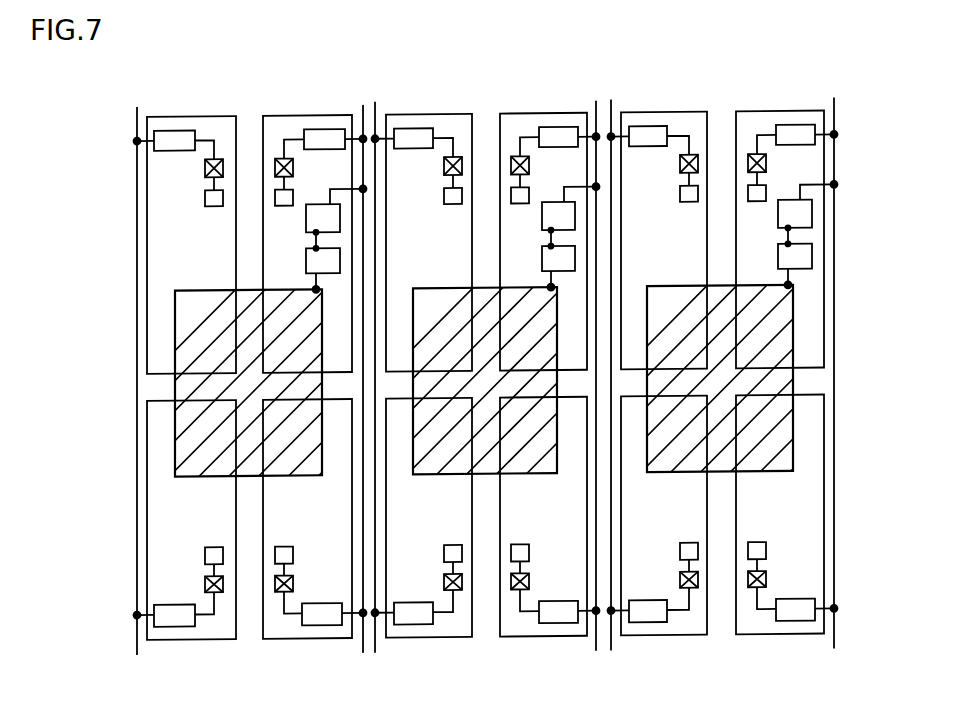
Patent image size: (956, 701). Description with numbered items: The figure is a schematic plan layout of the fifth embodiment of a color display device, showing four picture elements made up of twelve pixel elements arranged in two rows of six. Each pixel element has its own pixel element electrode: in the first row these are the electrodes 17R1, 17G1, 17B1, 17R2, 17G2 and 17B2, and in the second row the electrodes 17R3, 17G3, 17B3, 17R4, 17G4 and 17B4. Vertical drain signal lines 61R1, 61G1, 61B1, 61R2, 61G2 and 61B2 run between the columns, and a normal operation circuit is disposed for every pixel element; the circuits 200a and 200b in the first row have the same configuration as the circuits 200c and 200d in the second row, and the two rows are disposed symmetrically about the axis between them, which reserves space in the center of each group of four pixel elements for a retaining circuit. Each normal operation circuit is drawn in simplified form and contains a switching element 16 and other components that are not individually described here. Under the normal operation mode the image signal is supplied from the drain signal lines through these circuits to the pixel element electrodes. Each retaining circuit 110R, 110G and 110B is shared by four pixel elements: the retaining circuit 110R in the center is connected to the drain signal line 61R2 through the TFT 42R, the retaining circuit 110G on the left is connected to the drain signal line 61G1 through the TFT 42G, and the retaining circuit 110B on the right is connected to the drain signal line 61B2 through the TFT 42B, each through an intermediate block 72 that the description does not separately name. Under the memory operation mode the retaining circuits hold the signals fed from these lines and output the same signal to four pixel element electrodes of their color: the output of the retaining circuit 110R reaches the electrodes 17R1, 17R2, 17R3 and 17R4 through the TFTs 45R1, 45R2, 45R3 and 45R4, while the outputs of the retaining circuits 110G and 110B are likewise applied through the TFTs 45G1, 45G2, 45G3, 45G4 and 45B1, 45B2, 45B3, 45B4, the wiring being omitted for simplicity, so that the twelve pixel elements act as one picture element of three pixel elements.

The drain signal line 61R1 is at (137, 369).
The drain signal line 61G1 is at (360, 110).
The drain signal line 61B1 is at (394, 99).
The drain signal line 61R2 is at (594, 109).
The drain signal line 61G2 is at (614, 109).
The drain signal line 61B2 is at (833, 362).
The normal operation circuit 200a is at (158, 135).
The normal operation circuit 200b is at (318, 131).
The normal operation circuit 200c is at (155, 630).
The normal operation circuit 200d is at (320, 628).
The switching element 16 is at (205, 167).
The TFT 45R1 is at (206, 199).
The TFT 45G1 is at (294, 199).
The TFT 45B1 is at (444, 199).
The TFT 45R2 is at (530, 199).
The TFT 45G2 is at (680, 199).
The TFT 45B2 is at (767, 199).
The TFT 45R3 is at (206, 557).
The TFT 45G3 is at (294, 556).
The TFT 45B3 is at (444, 557).
The TFT 45R4 is at (530, 556).
The TFT 45G4 is at (680, 557).
The TFT 45B4 is at (767, 556).
The pixel element electrode 17R1 is at (154, 243).
The pixel element electrode 17G1 is at (537, 221).
The pixel element electrode 17B1 is at (423, 243).
The pixel element electrode 17R2 is at (548, 242).
The pixel element electrode 17G2 is at (659, 241).
The pixel element electrode 17B2 is at (785, 239).
The pixel element electrode 17R3 is at (152, 524).
The pixel element electrode 17G3 is at (313, 536).
The pixel element electrode 17B3 is at (423, 518).
The pixel element electrode 17R4 is at (548, 517).
The pixel element electrode 17G4 is at (659, 516).
The pixel element electrode 17B4 is at (785, 514).
The TFT 42G is at (323, 218).
The TFT 42R is at (558, 216).
The TFT 42B is at (795, 214).
The amplifier circuit 72 is at (559, 259).
The retaining circuit 110G is at (340, 382).
The retaining circuit 110R is at (578, 380).
The retaining circuit 110B is at (801, 378).